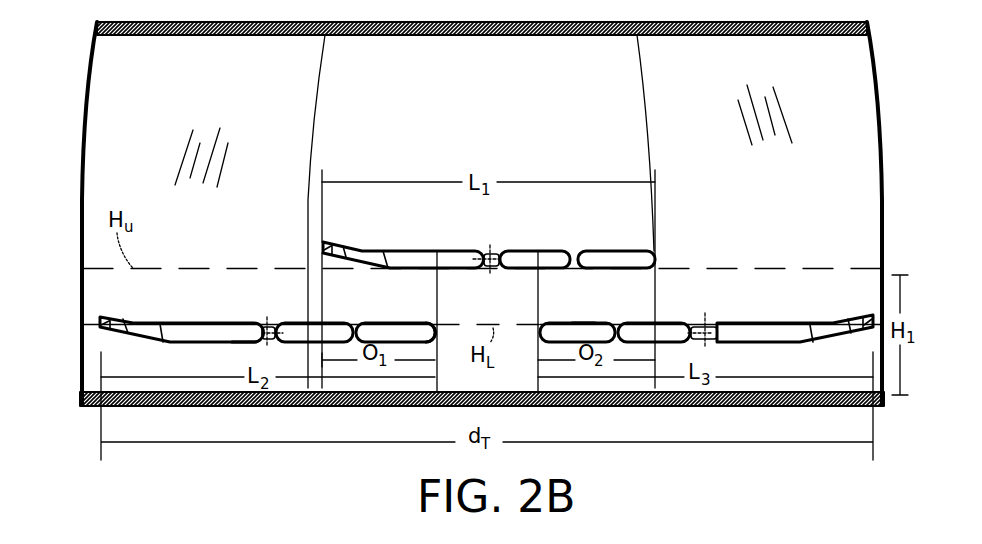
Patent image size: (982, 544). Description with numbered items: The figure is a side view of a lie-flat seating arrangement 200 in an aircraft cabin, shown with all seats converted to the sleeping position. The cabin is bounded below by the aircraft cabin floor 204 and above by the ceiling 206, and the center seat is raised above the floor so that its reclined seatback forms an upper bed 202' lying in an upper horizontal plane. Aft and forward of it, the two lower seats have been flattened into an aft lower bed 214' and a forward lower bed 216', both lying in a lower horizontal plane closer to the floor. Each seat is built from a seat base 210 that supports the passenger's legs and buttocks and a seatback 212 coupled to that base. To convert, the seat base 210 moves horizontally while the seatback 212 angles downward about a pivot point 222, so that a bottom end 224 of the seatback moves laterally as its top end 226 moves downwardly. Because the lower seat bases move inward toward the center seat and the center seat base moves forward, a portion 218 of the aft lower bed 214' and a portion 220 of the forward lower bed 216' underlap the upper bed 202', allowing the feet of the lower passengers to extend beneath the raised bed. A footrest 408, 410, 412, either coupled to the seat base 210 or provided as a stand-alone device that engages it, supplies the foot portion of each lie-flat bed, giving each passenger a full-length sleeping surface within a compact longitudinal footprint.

The lie-flat seating arrangement 200 is at (511, 161).
The upper bed 202' is at (403, 227).
The aircraft cabin floor 204 is at (85, 392).
The ceiling 206 is at (210, 34).
The seat base 210 is at (553, 260).
The seatback 212 is at (410, 265).
The aft lower bed 214' is at (182, 291).
The forward lower bed 216' is at (795, 290).
The portion of the aft lower bed 218 is at (387, 323).
The portion of the forward lower bed 220 is at (545, 320).
The pivot point 222 is at (500, 252).
The bottom end of the seatback 224 is at (252, 334).
The top end of the seatback 226 is at (325, 245).
The footrest 408 is at (656, 252).
The footrest 410 is at (435, 325).
The footrest 412 is at (582, 330).